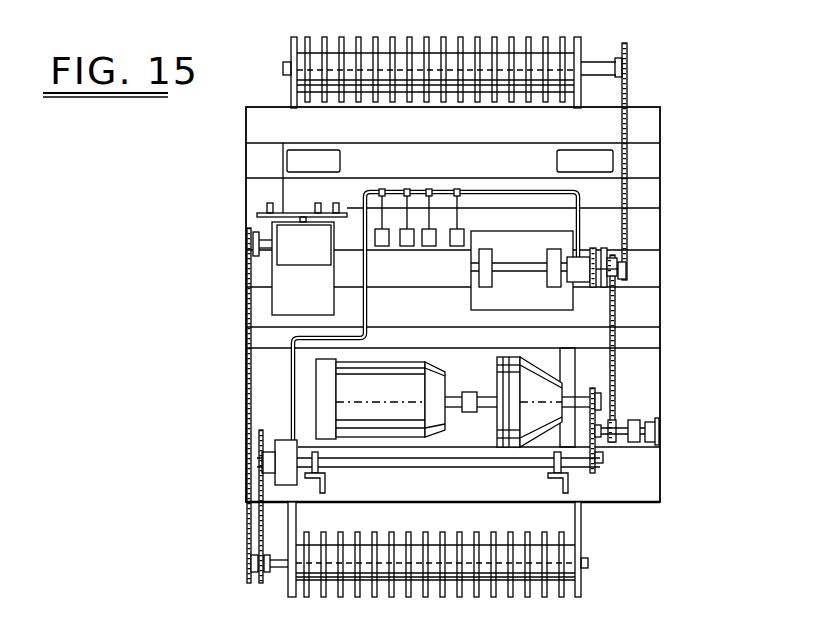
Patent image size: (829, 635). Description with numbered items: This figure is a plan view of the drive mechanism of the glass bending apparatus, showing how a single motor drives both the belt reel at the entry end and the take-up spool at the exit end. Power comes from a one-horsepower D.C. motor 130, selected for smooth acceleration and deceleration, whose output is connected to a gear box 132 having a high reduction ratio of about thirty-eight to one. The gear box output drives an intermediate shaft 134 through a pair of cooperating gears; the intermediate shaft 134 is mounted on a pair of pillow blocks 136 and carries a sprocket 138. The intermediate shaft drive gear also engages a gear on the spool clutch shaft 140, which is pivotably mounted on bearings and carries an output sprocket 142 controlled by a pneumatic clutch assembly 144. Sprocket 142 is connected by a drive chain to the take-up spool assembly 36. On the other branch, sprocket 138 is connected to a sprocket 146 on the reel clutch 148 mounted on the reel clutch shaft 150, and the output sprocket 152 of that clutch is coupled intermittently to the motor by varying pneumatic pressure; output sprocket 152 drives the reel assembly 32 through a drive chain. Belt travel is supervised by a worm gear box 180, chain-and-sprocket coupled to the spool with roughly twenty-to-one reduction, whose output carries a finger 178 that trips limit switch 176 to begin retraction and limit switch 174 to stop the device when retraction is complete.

The reel assembly 32 is at (565, 38).
The spool assembly 36 is at (323, 592).
The D.C. motor 130 is at (326, 394).
The gear box 132 is at (565, 383).
The intermediate shaft 134 is at (652, 424).
The pillow blocks 136 is at (633, 444).
The sprocket 138 is at (614, 422).
The spool clutch shaft 140 is at (580, 468).
The output sprocket 142 is at (258, 455).
The pneumatic clutch assembly 144 is at (276, 443).
The sprocket 146 is at (614, 256).
The reel clutch 148 is at (510, 262).
The reel clutch shaft 150 is at (597, 255).
The output sprocket 152 is at (630, 274).
The limit switch 174 is at (262, 213).
The limit switch 176 is at (338, 203).
The finger 178 is at (316, 210).
The worm gear box 180 is at (278, 258).